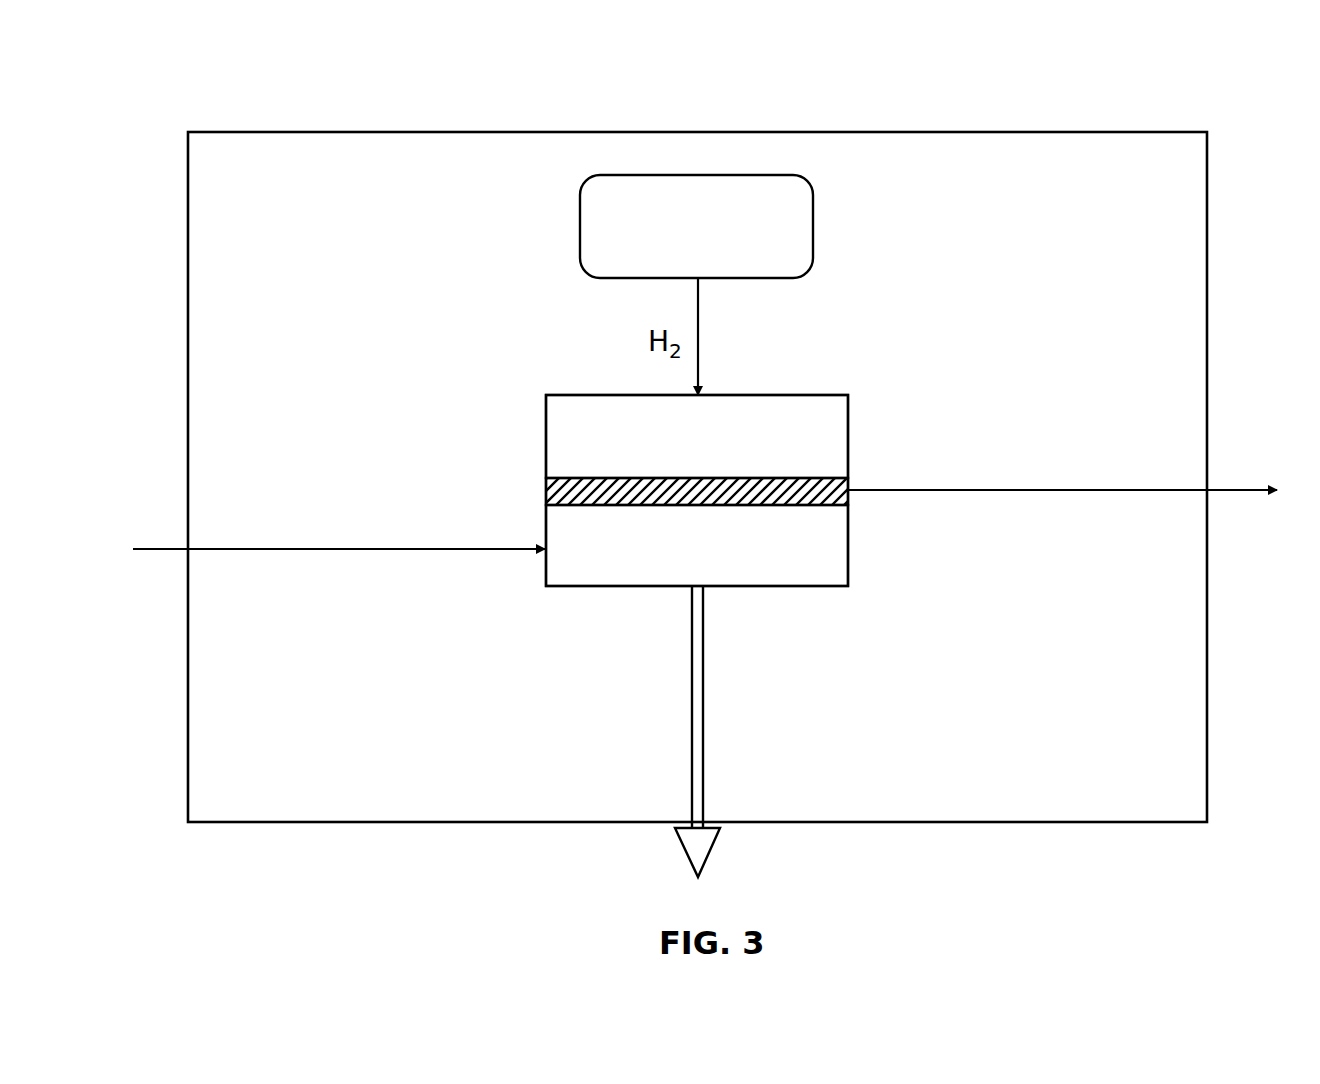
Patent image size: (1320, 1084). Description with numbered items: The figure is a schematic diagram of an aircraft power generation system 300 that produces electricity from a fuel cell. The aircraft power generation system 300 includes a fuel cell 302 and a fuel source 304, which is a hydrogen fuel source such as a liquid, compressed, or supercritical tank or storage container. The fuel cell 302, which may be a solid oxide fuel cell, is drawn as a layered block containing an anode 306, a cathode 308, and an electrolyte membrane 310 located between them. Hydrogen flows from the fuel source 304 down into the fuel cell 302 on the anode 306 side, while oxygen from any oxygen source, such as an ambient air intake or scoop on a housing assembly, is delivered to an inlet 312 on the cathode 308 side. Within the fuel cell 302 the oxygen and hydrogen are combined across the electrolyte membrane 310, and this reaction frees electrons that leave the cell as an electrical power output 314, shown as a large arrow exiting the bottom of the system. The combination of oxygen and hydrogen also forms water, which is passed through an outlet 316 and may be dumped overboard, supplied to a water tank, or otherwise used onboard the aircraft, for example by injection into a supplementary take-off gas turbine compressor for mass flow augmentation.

The aircraft power generation system 300 is at (1117, 87).
The fuel cell 302 is at (711, 511).
The fuel source 304 is at (771, 279).
The anode 306 is at (822, 428).
The cathode 308 is at (591, 570).
The electrolyte membrane 310 is at (544, 487).
The inlet 312 is at (173, 552).
The electrical power output 314 is at (712, 848).
The outlet 316 is at (1230, 494).